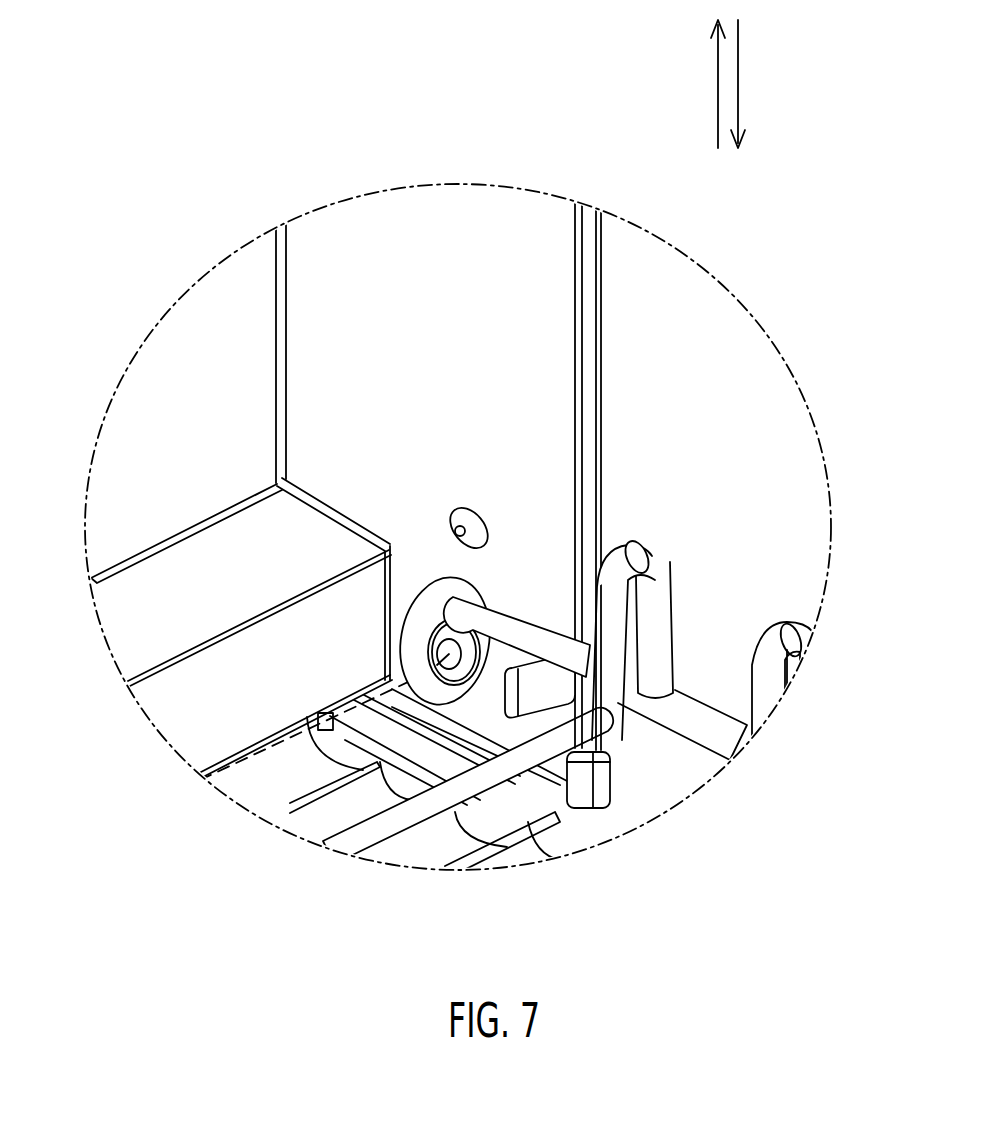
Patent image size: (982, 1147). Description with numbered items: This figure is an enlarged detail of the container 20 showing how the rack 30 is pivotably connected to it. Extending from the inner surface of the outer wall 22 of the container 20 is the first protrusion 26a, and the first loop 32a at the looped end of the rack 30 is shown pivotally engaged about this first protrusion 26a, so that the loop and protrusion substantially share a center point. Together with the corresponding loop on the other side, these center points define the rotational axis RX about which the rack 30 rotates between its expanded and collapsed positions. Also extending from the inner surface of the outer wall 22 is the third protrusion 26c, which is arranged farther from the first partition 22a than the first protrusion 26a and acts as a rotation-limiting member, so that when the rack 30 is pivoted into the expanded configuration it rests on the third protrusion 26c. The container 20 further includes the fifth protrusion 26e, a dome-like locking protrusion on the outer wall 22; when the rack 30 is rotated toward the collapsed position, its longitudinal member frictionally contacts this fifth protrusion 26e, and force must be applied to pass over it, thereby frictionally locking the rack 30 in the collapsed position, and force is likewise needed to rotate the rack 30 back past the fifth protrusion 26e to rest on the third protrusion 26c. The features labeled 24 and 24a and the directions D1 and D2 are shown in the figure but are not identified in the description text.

The container 20 is at (677, 420).
The outer wall 22 is at (527, 292).
The first partition 22a is at (203, 337).
The receptacle box 24 is at (160, 612).
The bottom edge of box 24a is at (210, 743).
The first protrusion 26a is at (458, 638).
The third protrusion 26c is at (540, 687).
The fifth protrusion 26e is at (469, 520).
The rack 30 is at (657, 763).
The first loop 32a is at (445, 598).
The rotational axis RX is at (273, 770).
The direction D1 is at (718, 90).
The direction D2 is at (738, 77).